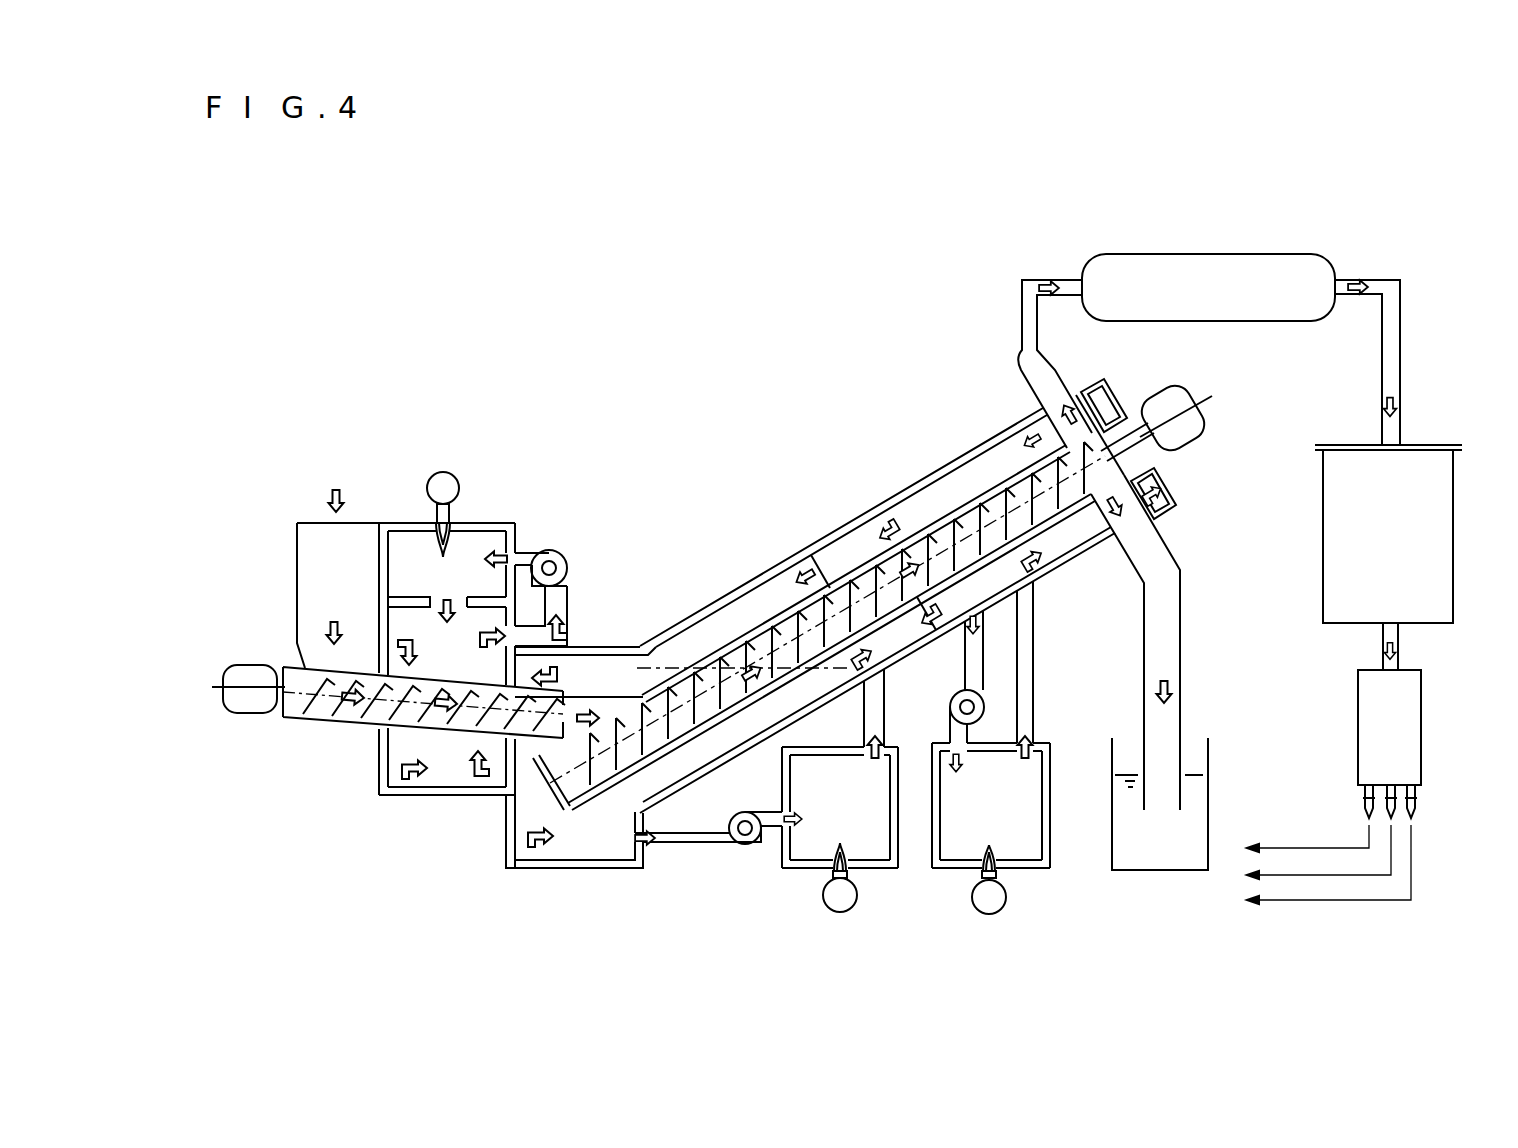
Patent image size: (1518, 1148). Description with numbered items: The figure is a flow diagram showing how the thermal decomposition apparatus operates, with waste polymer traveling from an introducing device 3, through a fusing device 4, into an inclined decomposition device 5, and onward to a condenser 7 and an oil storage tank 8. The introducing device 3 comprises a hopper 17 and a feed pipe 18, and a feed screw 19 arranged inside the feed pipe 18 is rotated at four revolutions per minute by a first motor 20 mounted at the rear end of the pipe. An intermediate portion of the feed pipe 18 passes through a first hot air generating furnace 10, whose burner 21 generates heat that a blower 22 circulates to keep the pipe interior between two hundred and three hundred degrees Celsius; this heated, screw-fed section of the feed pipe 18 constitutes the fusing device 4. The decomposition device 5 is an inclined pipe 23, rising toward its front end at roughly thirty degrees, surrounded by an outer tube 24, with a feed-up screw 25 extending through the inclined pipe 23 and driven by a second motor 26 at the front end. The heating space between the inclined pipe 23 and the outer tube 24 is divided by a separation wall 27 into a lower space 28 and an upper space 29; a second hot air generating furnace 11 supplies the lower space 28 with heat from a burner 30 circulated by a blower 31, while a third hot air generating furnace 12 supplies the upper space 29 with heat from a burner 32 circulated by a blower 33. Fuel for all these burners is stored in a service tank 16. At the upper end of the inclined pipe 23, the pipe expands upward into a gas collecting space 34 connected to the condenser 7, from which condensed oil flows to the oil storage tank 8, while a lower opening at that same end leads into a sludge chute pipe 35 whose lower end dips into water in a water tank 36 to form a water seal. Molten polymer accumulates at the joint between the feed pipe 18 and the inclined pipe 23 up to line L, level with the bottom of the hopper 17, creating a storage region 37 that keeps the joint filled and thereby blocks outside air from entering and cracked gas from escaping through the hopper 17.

The introducing device 3 is at (266, 623).
The fusing device 4 is at (441, 755).
The inclined decomposition device 5 is at (783, 524).
The condenser 7 is at (1213, 264).
The oil storage tank 8 is at (1446, 527).
The first hot air generating furnace 10 is at (475, 550).
The second hot air generating furnace 11 is at (805, 853).
The third hot air generating furnace 12 is at (957, 853).
The service tank 16 is at (1413, 737).
The hopper 17 is at (297, 550).
The feed pipe 18 is at (306, 718).
The feed screw 19 is at (368, 722).
The first motor 20 is at (234, 713).
The burner 21 is at (453, 480).
The blower 22 is at (564, 562).
The inclined pipe 23 is at (752, 620).
The outer tube 24 is at (967, 450).
The feed-up screw 25 is at (745, 655).
The second motor 26 is at (1199, 432).
The separation wall 27 is at (842, 548).
The lower space 28 is at (767, 590).
The upper space 29 is at (903, 507).
The burner 30 is at (838, 910).
The blower 31 is at (738, 843).
The burner 32 is at (1000, 903).
The blower 33 is at (950, 705).
The gas collecting space 34 is at (1060, 388).
The sludge chute pipe 35 is at (1176, 605).
The water tank 36 is at (1177, 860).
The storage region 37 is at (605, 705).